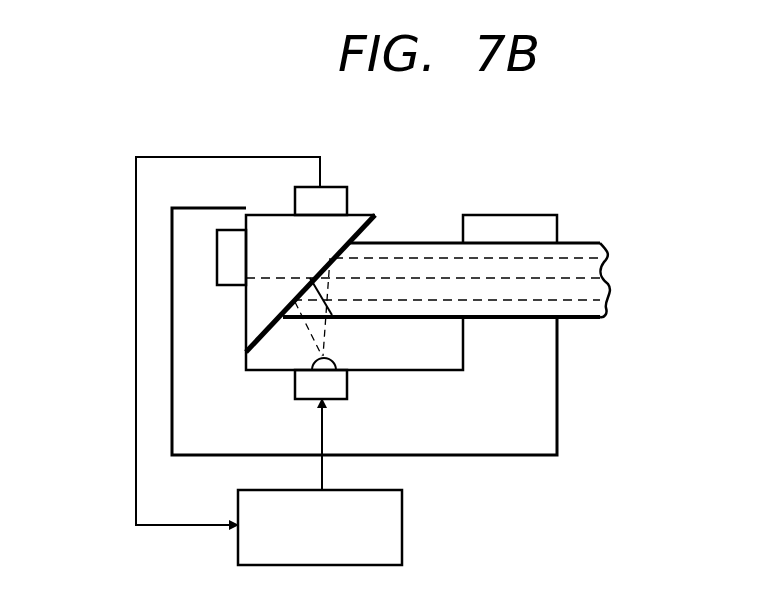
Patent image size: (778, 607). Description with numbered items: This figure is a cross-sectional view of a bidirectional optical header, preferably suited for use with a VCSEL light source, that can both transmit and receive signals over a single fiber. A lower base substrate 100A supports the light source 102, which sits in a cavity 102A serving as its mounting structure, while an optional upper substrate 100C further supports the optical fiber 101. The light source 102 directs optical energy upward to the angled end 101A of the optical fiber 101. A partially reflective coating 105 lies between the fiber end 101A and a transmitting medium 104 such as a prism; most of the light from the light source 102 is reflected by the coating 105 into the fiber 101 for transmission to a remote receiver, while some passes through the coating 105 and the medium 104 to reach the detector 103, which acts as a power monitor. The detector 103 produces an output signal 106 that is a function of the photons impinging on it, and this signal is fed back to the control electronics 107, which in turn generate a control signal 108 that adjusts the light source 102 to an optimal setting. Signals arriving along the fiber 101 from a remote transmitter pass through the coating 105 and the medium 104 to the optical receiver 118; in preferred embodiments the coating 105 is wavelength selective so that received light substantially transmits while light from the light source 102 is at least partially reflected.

The lower base substrate 100A is at (543, 443).
The upper substrate 100C is at (548, 242).
The optical fiber 101 is at (592, 267).
The angled end of optical fiber 101A is at (330, 273).
The light source 102 is at (312, 385).
The cavity 102A is at (350, 383).
The detector 103 is at (328, 195).
The transmitting medium 104 is at (297, 253).
The partially reflective surface 105 is at (332, 315).
The output signal 106 is at (246, 157).
The control electronics 107 is at (402, 556).
The control signal 108 is at (322, 475).
The optical receiver 118 is at (230, 270).